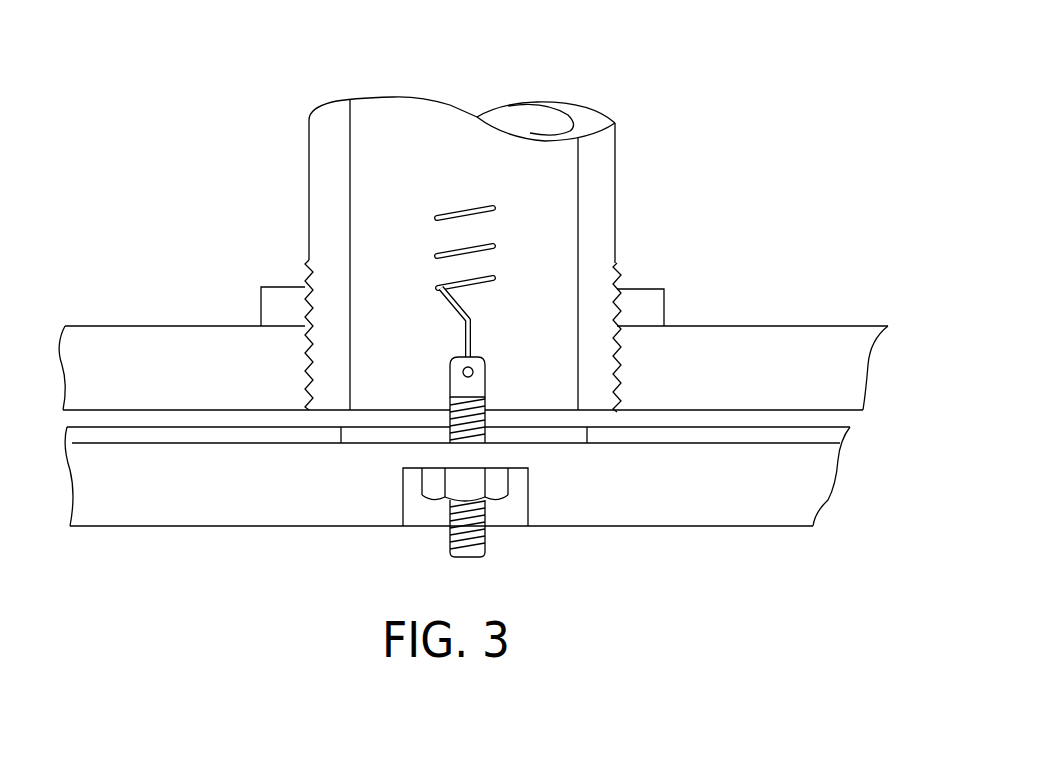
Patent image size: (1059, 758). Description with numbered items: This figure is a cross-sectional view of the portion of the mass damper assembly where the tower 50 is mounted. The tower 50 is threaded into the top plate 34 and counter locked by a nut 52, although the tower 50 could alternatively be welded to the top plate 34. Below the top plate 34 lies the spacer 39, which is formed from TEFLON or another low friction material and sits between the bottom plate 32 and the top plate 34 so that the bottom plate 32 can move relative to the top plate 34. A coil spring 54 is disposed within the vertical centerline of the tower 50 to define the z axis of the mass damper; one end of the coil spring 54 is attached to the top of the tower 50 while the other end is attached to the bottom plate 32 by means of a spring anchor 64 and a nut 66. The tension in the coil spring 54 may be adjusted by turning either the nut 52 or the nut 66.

The tower 50 is at (615, 123).
The coil spring 54 is at (475, 208).
The spring anchor 64 is at (487, 377).
The nut 52 is at (664, 289).
The top plate 34 is at (797, 326).
The spacer 39 is at (855, 428).
The bottom plate 32 is at (833, 495).
The nut 66 is at (438, 502).